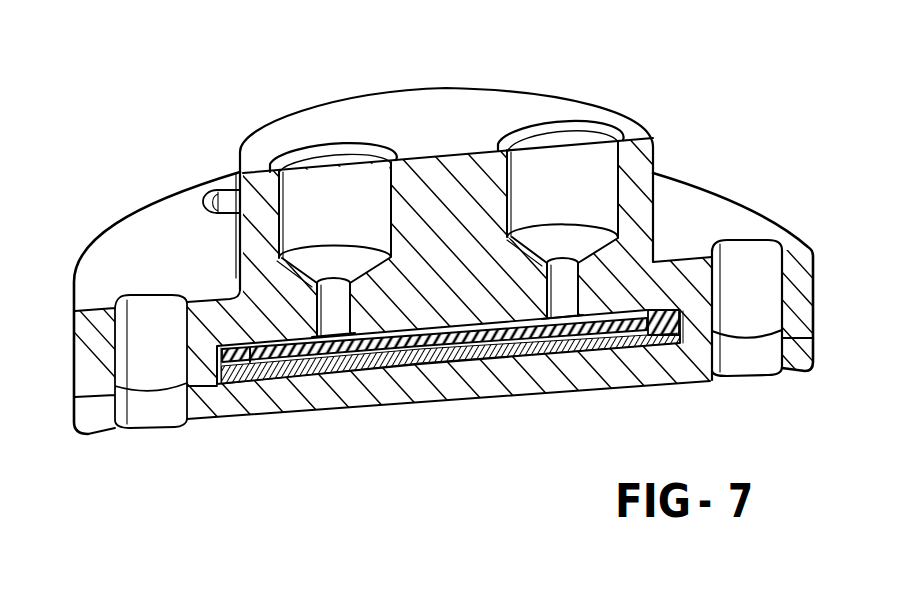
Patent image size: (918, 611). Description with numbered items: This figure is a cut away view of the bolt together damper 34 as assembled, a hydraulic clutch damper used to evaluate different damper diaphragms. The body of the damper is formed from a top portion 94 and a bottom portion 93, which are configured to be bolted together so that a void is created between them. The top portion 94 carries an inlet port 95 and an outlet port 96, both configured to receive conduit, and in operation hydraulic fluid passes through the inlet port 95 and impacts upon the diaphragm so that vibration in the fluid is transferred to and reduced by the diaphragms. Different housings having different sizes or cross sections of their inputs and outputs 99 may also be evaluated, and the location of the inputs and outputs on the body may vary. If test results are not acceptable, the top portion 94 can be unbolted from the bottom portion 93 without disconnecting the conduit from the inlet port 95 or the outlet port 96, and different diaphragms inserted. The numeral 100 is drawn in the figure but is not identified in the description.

The bolt together damper 34 is at (668, 92).
The bottom portion 93 is at (543, 356).
The top portion 94 is at (722, 197).
The inlet port 95 is at (327, 175).
The outlet port 96 is at (548, 148).
The inputs and outputs 99 is at (349, 367).
The retainer clip 100 is at (250, 383).